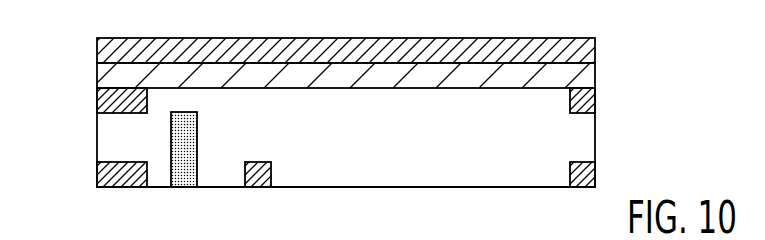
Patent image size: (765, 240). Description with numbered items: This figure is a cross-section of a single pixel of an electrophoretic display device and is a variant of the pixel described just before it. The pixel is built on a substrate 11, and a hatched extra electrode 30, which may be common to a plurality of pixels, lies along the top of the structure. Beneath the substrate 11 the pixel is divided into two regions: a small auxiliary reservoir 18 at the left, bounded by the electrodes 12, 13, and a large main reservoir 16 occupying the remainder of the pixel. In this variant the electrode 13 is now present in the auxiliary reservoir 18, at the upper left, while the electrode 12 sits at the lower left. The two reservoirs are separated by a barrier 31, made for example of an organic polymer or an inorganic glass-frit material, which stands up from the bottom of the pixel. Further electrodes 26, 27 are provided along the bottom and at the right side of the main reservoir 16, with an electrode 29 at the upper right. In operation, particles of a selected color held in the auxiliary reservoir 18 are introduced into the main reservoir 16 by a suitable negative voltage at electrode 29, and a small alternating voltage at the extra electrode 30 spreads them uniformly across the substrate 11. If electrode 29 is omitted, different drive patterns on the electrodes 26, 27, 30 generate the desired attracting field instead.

The extra electrode 30 is at (575, 50).
The substrate 11 is at (585, 76).
The electrode 13 is at (106, 100).
The electrode 29 is at (582, 103).
The auxiliary reservoir 18 is at (122, 137).
The electrode 12 is at (126, 176).
The barrier 31 is at (181, 187).
The electrode 26 is at (255, 177).
The main reservoir 16 is at (445, 143).
The electrode 27 is at (585, 177).